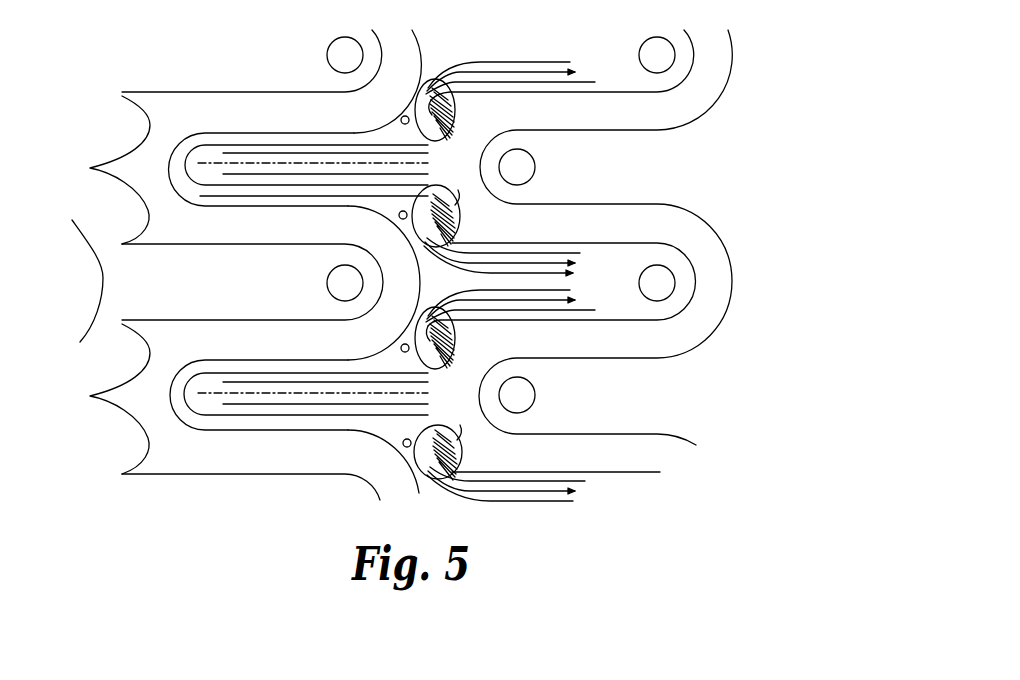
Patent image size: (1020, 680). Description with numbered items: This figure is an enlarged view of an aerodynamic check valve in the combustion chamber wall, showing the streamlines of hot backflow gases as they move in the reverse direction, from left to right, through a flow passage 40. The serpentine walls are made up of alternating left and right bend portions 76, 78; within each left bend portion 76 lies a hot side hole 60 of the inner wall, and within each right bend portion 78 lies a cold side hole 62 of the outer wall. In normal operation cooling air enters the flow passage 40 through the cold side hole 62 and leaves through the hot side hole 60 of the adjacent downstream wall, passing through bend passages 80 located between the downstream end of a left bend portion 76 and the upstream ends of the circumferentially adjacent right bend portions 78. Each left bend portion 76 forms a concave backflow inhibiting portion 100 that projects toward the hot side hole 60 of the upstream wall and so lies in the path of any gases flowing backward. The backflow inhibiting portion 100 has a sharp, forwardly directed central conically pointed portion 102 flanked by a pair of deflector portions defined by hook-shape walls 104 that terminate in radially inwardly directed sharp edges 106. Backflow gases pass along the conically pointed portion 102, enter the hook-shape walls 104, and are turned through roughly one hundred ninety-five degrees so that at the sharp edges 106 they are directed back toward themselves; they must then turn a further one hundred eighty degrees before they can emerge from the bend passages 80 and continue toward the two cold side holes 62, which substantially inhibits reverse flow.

The flow passage 40 is at (275, 154).
The hot side hole 60 is at (200, 168).
The cold side hole 62 is at (643, 53).
The left bend portion 76 is at (463, 173).
The right bend portion 78 is at (707, 80).
The bend passage 80 is at (428, 86).
The backflow inhibiting portion 100 is at (413, 207).
The conically pointed portion 102 is at (420, 167).
The hook-shape wall 104 is at (412, 228).
The sharp edge 106 is at (452, 228).